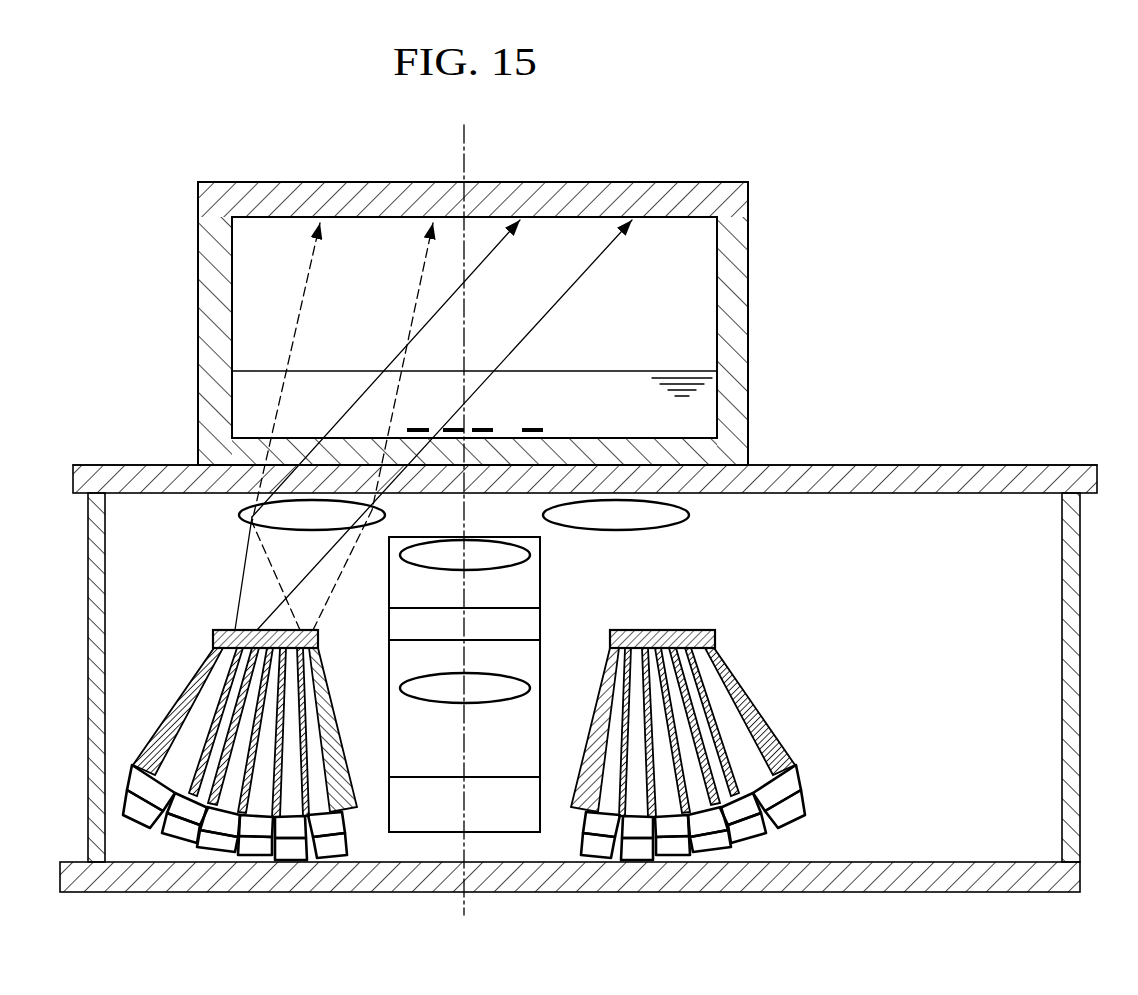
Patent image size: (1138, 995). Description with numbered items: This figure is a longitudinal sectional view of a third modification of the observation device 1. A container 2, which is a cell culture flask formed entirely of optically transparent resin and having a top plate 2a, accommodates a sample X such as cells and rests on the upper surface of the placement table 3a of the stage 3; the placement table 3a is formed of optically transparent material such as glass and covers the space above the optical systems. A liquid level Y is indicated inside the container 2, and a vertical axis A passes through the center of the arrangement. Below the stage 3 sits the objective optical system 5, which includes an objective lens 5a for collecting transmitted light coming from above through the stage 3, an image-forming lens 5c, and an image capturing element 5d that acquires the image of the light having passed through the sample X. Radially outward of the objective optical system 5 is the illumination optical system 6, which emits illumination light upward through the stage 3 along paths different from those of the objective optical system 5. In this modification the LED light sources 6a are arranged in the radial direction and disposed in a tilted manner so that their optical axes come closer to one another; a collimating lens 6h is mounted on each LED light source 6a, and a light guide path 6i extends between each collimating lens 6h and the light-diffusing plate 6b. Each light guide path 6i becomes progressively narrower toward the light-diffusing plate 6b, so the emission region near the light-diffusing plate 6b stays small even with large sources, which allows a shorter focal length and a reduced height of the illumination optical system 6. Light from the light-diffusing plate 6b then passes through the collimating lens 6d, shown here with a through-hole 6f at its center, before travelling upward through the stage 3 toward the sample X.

The observation device 1 is at (112, 158).
The container 2 is at (754, 226).
The top plate 2a is at (630, 182).
The stage 3 is at (986, 462).
The placement table 3a is at (897, 464).
The objective optical system 5 is at (548, 597).
The objective lens 5a is at (518, 568).
The image-forming lens 5c is at (525, 668).
The image capturing element 5d is at (478, 778).
The illumination optical system 6 is at (797, 628).
The LED light source 6a is at (118, 806).
The light-diffusing plate 6b is at (213, 638).
The collimating lens 6d is at (240, 515).
The through-hole 6f is at (398, 518).
The collimating lens 6h is at (130, 784).
The light guide path 6i is at (180, 716).
The optical axis A is at (470, 158).
The sample X is at (537, 426).
The water surface Y is at (677, 373).